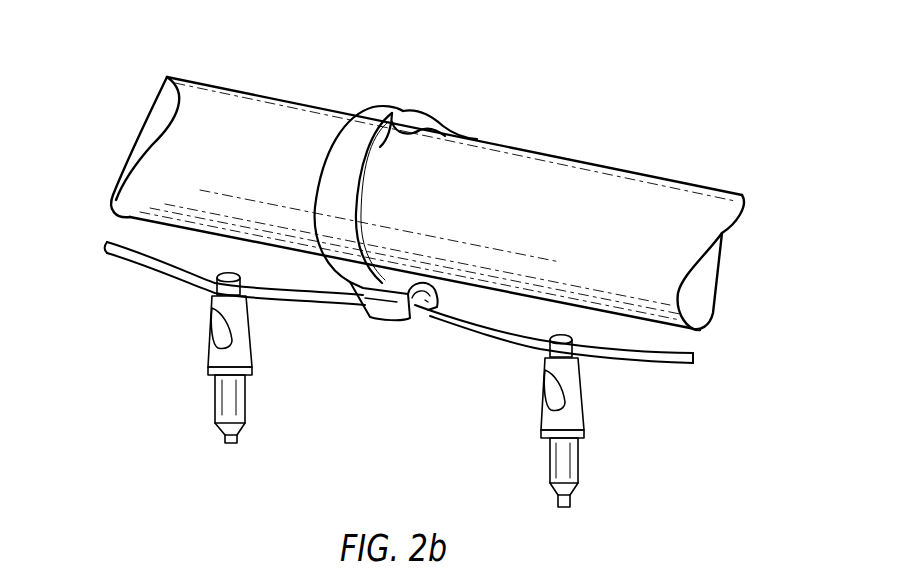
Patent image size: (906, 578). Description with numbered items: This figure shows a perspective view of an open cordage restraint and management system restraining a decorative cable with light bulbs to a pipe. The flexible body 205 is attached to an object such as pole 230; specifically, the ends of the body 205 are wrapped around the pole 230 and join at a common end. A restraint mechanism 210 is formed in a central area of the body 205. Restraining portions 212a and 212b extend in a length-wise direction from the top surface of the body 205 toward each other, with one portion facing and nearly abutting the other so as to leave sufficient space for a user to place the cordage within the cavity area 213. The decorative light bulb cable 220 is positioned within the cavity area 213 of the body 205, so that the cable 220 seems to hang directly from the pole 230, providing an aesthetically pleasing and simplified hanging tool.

The body 205 is at (362, 122).
The pole 230 is at (615, 182).
The restraint mechanism 210 is at (410, 327).
The restraining portion 212a is at (387, 315).
The restraining portion 212b is at (450, 315).
The cavity area 213 is at (428, 300).
The decorative light bulb cable 220 is at (172, 270).